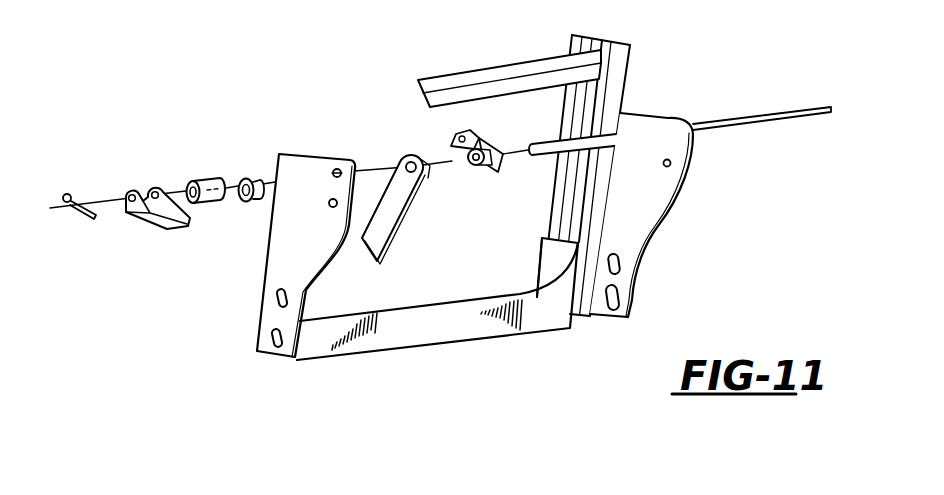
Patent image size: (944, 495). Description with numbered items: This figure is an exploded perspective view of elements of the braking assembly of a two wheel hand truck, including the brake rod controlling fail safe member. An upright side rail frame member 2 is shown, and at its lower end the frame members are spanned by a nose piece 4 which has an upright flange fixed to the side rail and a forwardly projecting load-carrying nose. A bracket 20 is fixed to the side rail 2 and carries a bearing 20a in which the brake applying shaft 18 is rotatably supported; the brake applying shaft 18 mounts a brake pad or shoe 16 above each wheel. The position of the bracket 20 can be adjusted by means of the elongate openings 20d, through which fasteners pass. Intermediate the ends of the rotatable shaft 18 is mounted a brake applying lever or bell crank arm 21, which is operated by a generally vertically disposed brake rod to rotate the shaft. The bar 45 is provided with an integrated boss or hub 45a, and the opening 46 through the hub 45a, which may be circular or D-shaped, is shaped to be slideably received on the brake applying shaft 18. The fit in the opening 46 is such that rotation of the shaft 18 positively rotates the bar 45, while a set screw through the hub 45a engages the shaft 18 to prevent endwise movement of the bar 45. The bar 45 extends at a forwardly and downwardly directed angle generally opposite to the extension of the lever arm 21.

The side rail frame member 2 is at (618, 87).
The nose piece 4 is at (535, 315).
The brake pad or shoe 16 is at (167, 189).
The brake applying shaft 18 is at (663, 120).
The bracket 20 is at (320, 243).
The bearing 20a is at (250, 204).
The elongate opening 20d is at (272, 303).
The brake applying lever or bell crank arm 21 is at (487, 133).
The bar 45 is at (404, 156).
The boss or hub 45a is at (429, 157).
The opening 46 is at (404, 160).